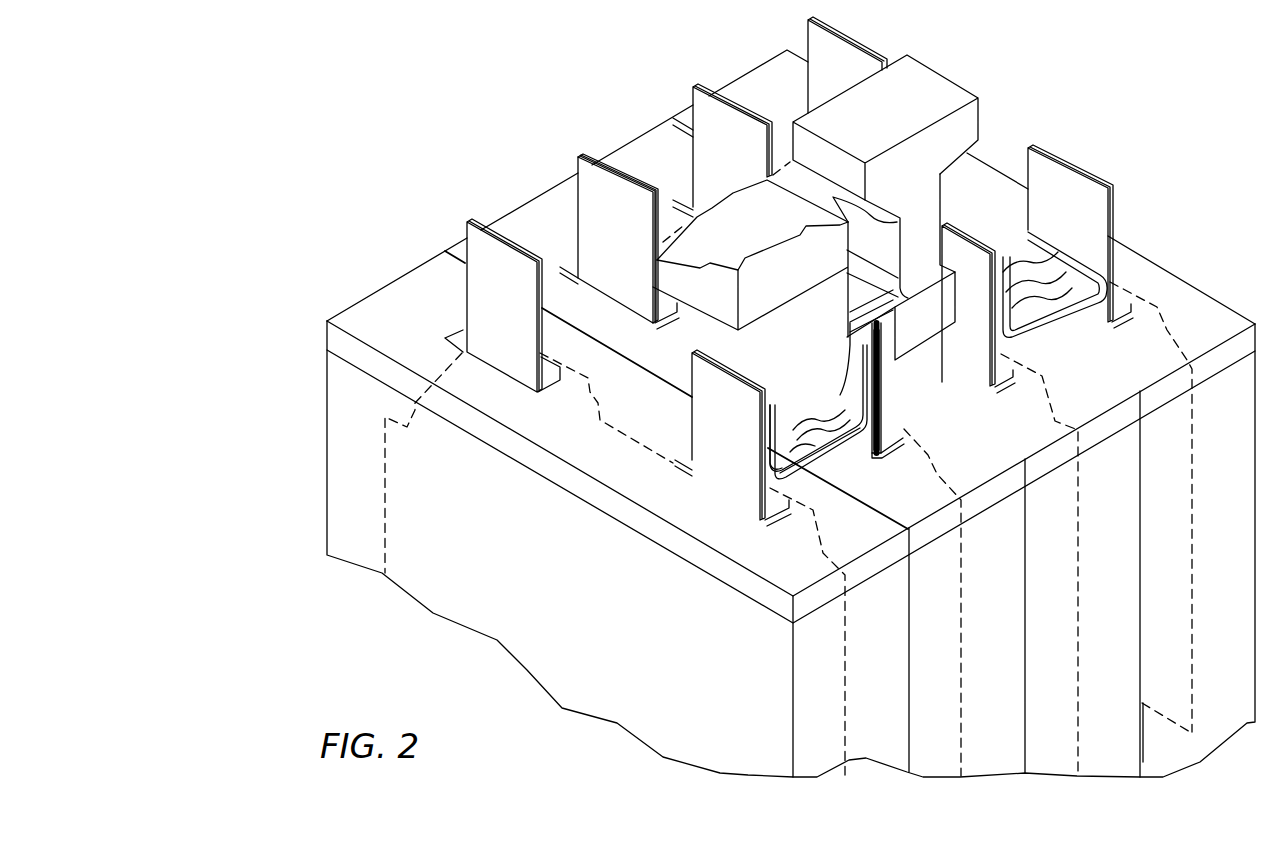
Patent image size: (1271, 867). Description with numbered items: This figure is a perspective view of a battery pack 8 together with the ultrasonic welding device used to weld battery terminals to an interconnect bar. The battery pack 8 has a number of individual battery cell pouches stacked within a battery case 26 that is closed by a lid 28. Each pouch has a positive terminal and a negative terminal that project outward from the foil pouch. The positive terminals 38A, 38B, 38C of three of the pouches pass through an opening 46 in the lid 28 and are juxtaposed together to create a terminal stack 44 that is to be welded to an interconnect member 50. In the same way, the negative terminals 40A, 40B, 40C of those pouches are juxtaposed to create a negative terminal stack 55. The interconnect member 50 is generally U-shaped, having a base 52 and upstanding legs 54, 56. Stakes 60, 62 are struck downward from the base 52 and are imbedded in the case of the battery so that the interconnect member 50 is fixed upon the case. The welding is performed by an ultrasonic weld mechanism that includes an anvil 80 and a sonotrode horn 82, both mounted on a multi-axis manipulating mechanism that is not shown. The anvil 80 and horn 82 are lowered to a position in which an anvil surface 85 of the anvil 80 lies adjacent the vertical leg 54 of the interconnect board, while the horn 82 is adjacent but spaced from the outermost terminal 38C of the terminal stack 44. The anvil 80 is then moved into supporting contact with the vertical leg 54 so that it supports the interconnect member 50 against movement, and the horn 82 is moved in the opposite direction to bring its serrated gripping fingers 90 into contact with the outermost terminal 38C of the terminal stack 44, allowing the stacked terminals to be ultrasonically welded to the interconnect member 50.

The battery pack 8 is at (1137, 240).
The battery case 26 is at (343, 433).
The lid 28 is at (405, 293).
The positive terminal 38A is at (924, 444).
The positive terminal 38B is at (892, 425).
The positive terminal 38C is at (882, 402).
The negative terminal 40A is at (577, 238).
The negative terminal 40B is at (579, 167).
The negative terminal 40C is at (587, 154).
The terminal stack 44 is at (896, 410).
The opening 46 is at (904, 440).
The interconnect member 50 is at (838, 442).
The base 52 is at (803, 437).
The leg 54 is at (836, 393).
The negative terminal stack 55 is at (593, 233).
The leg 56 is at (778, 455).
The stake 60 is at (830, 435).
The stake 62 is at (772, 402).
The anvil 80 is at (713, 287).
The sonotrode horn 82 is at (933, 103).
The anvil surface 85 is at (865, 345).
The serrated gripping fingers 90 is at (898, 323).